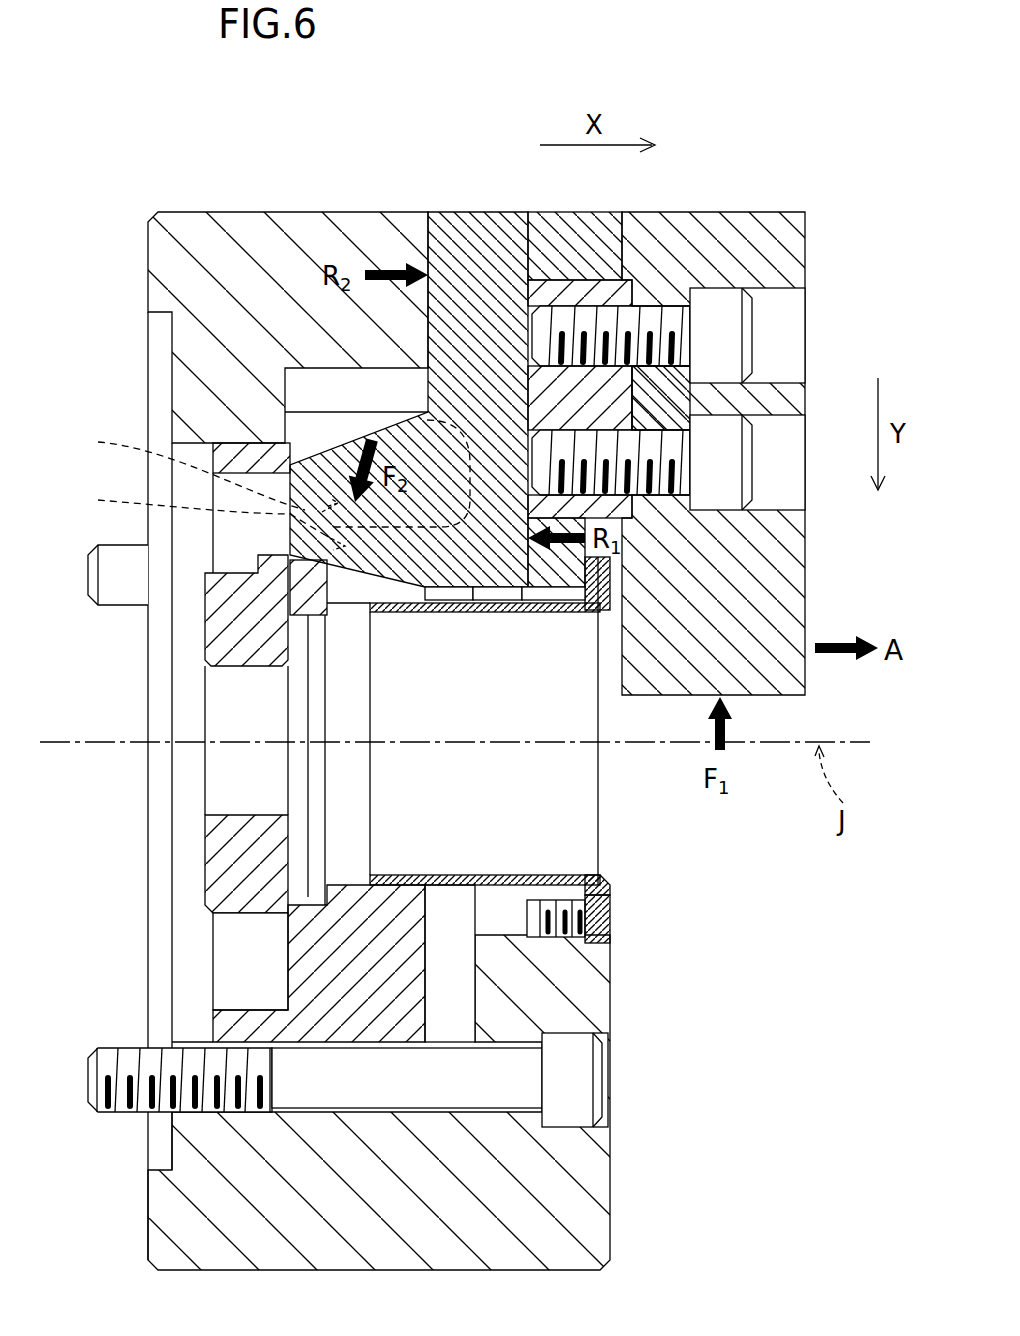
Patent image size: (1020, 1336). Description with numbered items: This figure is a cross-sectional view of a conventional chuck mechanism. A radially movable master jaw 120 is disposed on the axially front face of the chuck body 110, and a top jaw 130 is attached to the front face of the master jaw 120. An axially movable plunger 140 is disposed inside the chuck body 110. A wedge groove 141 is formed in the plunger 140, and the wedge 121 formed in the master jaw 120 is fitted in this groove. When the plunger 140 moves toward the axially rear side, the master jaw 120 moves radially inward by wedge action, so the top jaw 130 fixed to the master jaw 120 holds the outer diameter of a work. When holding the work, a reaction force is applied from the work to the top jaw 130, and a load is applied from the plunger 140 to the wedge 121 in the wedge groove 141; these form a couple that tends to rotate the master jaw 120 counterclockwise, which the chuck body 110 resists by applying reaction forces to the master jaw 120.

The chuck body 110 is at (293, 232).
The master jaw 120 is at (480, 262).
The top jaw 130 is at (750, 243).
The plunger 140 is at (338, 948).
The wedge groove 141 is at (193, 470).
The wedge 121 is at (196, 518).